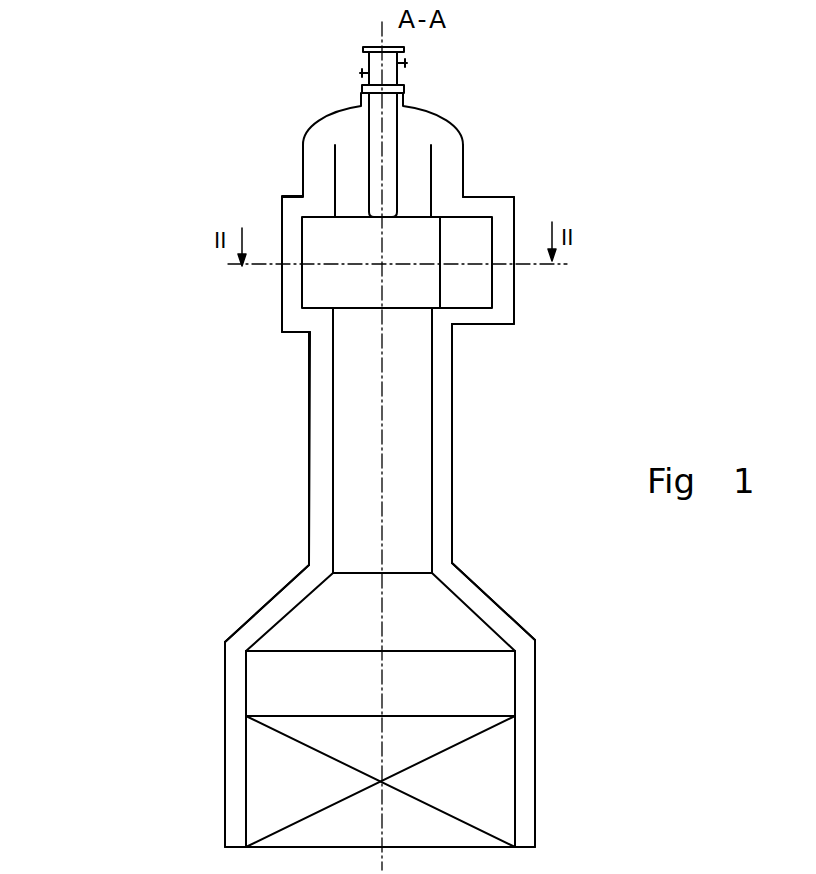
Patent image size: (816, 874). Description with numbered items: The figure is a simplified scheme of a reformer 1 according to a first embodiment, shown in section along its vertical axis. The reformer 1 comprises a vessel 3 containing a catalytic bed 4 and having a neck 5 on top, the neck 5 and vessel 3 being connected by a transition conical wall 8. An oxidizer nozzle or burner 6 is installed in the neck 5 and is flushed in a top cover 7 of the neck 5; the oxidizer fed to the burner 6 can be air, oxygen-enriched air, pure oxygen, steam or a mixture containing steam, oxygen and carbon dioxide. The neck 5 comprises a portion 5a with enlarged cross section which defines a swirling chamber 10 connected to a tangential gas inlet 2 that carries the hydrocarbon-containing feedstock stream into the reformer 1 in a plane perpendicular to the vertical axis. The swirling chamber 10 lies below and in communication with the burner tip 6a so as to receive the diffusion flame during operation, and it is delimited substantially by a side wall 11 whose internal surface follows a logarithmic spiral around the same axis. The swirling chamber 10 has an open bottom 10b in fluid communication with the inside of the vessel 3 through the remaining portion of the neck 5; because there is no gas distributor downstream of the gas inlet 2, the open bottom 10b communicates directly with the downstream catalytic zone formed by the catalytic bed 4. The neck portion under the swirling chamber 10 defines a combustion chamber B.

The reformer 1 is at (279, 496).
The gas inlet 2 is at (495, 222).
The vessel 3 is at (237, 750).
The catalytic bed 4 is at (253, 807).
The neck 5 is at (442, 483).
The portion with enlarged cross section 5a is at (522, 307).
The burner 6 is at (375, 140).
The burner tip 6a is at (377, 218).
The top cover 7 is at (436, 124).
The transition conical wall 8 is at (283, 600).
The swirling chamber 10 is at (320, 279).
The open bottom 10b is at (407, 310).
The side wall 11 is at (290, 308).
The combustion chamber B is at (337, 405).